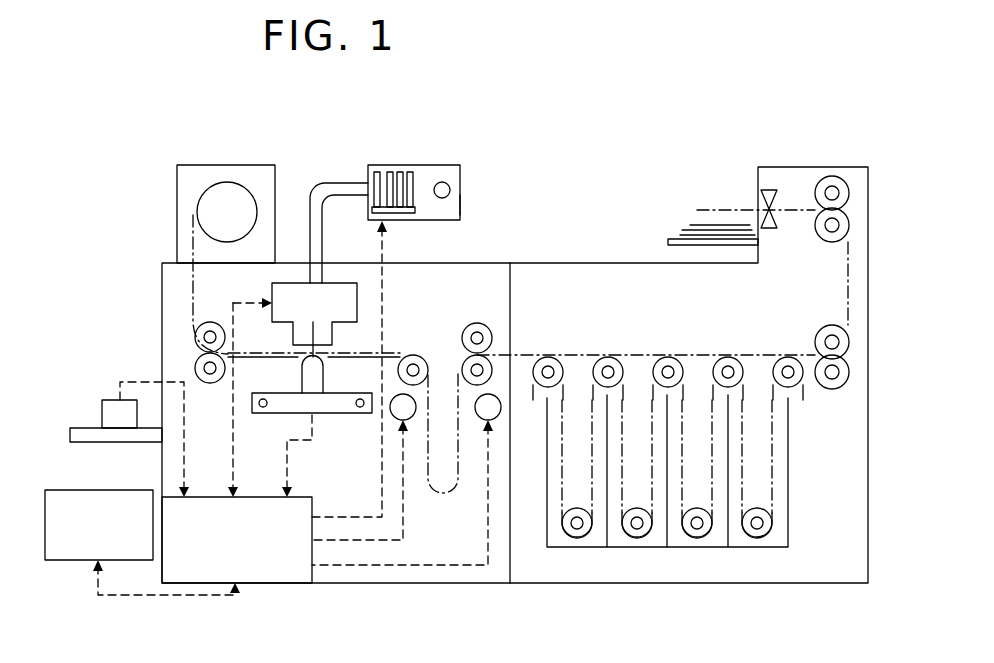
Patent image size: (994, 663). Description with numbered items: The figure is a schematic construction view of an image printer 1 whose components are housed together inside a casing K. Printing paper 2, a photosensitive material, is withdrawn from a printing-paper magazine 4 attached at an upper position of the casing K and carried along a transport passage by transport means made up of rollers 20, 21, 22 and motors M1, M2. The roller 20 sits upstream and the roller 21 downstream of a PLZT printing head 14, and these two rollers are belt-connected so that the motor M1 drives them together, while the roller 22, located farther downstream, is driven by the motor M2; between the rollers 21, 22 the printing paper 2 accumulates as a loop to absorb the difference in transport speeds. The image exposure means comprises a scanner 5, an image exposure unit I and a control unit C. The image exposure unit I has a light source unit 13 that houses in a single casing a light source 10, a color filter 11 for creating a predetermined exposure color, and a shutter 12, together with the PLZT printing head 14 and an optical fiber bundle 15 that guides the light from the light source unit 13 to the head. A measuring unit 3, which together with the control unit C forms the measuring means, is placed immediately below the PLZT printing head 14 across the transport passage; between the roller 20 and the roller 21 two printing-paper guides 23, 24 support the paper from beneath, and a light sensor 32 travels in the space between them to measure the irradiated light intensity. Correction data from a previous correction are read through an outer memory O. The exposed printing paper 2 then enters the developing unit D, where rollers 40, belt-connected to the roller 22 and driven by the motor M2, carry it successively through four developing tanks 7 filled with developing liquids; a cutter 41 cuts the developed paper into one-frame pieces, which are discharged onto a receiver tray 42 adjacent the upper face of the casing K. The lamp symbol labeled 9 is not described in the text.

The image printer 1 is at (130, 157).
The printing-paper magazine 4 is at (177, 205).
The image exposure unit I is at (292, 266).
The light source 10 is at (430, 171).
The color filter 11 is at (409, 171).
The shutter 12 is at (375, 170).
The light source unit 13 is at (460, 205).
The light source lamp 9 is at (442, 190).
The optical fiber bundle 15 is at (333, 197).
The PLZT printing head 14 is at (272, 296).
The light sensor 32 is at (314, 325).
The measuring unit 3 is at (323, 412).
The printing-paper guide 23 is at (247, 362).
The printing-paper guide 24 is at (350, 360).
The roller 20 is at (193, 360).
The roller 21 is at (415, 355).
The roller 22 is at (463, 335).
The motor M1 is at (408, 414).
The motor M2 is at (488, 418).
The scanner 5 is at (105, 400).
The casing K is at (162, 468).
The outer memory O is at (80, 560).
The control unit C is at (263, 583).
The developing unit D is at (603, 282).
The printing paper 2 is at (527, 355).
The developing tank 7 is at (785, 492).
The rollers 40 is at (667, 357).
The cutter 41 is at (762, 193).
The receiver tray 42 is at (668, 242).